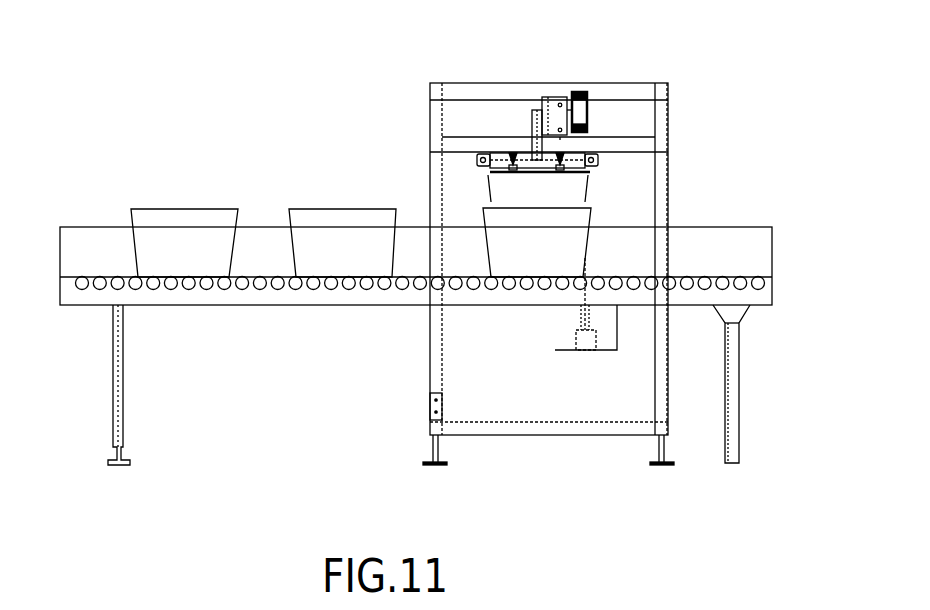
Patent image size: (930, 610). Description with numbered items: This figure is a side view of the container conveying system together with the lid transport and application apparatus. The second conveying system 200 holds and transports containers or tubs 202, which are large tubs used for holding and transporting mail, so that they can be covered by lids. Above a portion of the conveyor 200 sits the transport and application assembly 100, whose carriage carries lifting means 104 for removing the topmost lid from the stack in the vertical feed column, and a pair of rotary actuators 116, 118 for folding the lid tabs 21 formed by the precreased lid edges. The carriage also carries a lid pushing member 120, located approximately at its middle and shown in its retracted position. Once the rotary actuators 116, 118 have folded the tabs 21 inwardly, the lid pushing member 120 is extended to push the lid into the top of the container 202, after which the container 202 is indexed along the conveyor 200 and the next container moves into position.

The lid transport and application assembly 100 is at (537, 88).
The lifting means 104 is at (570, 155).
The rotary actuator 116 is at (596, 160).
The rotary actuator 118 is at (492, 173).
The lid pushing member 120 is at (530, 118).
The second conveying system 200 is at (86, 220).
The container 202 is at (320, 238).
The tab 21 is at (490, 198).